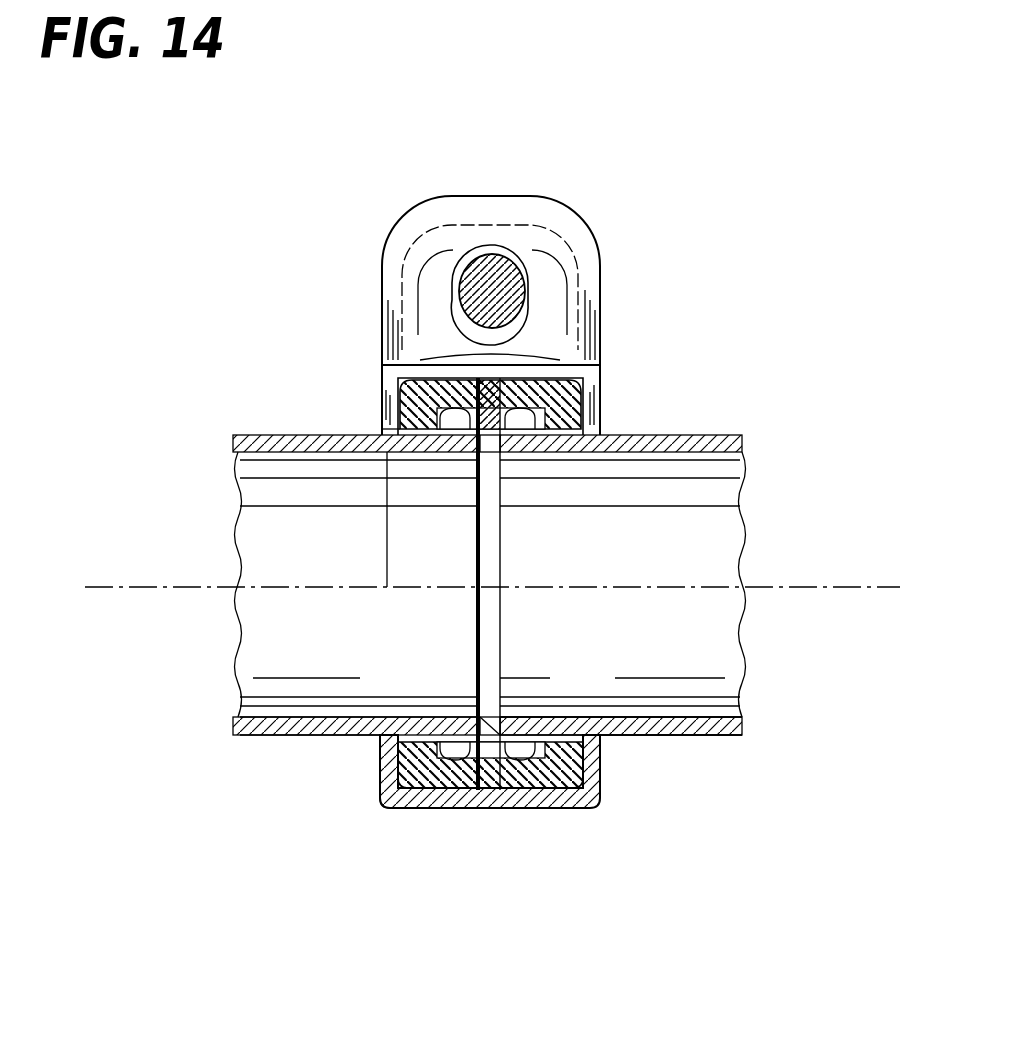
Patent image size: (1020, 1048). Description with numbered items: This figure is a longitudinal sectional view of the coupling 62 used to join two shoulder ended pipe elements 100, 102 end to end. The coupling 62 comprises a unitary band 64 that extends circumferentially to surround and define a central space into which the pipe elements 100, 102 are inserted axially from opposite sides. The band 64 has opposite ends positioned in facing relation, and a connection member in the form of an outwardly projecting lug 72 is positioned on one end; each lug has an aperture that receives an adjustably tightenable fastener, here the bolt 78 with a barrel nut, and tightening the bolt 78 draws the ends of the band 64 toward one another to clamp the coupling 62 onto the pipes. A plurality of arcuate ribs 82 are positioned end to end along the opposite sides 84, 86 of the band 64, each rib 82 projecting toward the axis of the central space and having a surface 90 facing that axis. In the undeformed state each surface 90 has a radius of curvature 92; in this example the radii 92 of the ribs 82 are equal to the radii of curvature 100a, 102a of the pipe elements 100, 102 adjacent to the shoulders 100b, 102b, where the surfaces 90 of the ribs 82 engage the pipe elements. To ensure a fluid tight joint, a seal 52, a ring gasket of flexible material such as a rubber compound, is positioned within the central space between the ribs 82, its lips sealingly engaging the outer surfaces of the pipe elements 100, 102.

The seal 52 is at (497, 783).
The coupling 62 is at (603, 373).
The band 64 is at (552, 805).
The lug 72 is at (578, 245).
The bolt 78 is at (455, 282).
The arcuate rib 82 is at (379, 428).
The side of the band 84 is at (378, 783).
The side of the band 86 is at (605, 770).
The surface 90 is at (379, 434).
The radius of curvature 92 is at (385, 539).
The shoulder ended pipe element 100 is at (265, 737).
The radius of curvature 100a is at (300, 737).
The shoulder 100b is at (455, 742).
The shoulder ended pipe element 102 is at (725, 725).
The radius of curvature 102a is at (690, 737).
The shoulder 102b is at (508, 722).